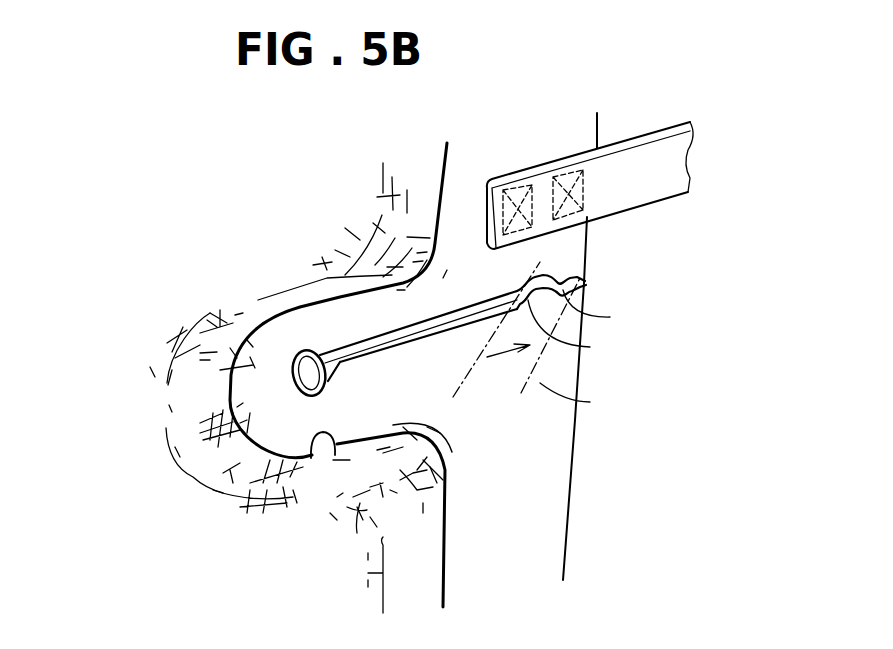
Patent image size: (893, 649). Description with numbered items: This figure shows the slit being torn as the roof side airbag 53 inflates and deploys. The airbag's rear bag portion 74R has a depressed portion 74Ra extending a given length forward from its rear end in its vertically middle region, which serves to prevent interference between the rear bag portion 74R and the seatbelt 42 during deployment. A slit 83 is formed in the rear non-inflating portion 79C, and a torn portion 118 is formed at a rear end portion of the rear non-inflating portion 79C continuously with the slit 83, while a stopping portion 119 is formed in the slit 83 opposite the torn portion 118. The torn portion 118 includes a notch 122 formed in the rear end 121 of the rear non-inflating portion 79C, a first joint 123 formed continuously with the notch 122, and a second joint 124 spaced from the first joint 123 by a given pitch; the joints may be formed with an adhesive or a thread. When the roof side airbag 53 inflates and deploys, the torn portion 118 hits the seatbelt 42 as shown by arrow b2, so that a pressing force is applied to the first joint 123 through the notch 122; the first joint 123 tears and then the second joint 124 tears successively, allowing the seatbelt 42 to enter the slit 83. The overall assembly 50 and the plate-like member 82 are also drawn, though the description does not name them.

The seat belt device 50 is at (155, 207).
The roof side airbag 53 is at (202, 210).
The rear bag portion 74R is at (256, 214).
The depressed portion 74Ra is at (337, 440).
The slit 83 is at (367, 343).
The stopping portion 119 is at (295, 383).
The torn portion 118 is at (530, 277).
The notch 122 is at (585, 278).
The first joint 123 is at (585, 310).
The second joint 124 is at (587, 348).
The seatbelt 42 is at (590, 402).
The arrow b2 is at (503, 369).
The rear end 121 is at (577, 462).
The plate 82 is at (657, 132).
The rear non-inflating portion 79C is at (552, 112).